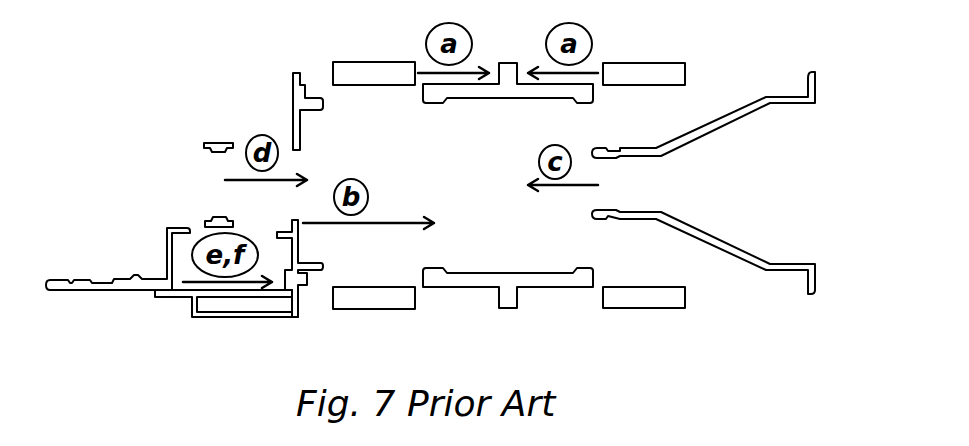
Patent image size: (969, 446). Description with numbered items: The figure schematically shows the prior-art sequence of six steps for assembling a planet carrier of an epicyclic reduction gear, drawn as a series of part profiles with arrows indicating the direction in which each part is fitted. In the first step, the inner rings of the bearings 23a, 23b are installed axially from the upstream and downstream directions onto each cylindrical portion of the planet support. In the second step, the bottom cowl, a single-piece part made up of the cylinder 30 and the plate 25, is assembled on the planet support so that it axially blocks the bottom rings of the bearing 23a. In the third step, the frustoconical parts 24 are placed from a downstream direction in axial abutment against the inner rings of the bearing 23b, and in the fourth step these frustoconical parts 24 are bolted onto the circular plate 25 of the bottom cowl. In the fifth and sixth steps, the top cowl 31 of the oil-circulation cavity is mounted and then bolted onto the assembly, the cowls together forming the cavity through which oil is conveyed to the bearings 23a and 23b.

The bearing 23a is at (363, 73).
The bearing 23b is at (653, 73).
The frustoconical part 24 is at (786, 103).
The plate 25 is at (296, 122).
The cylinder 30 is at (296, 318).
The top cowl 31 is at (167, 258).